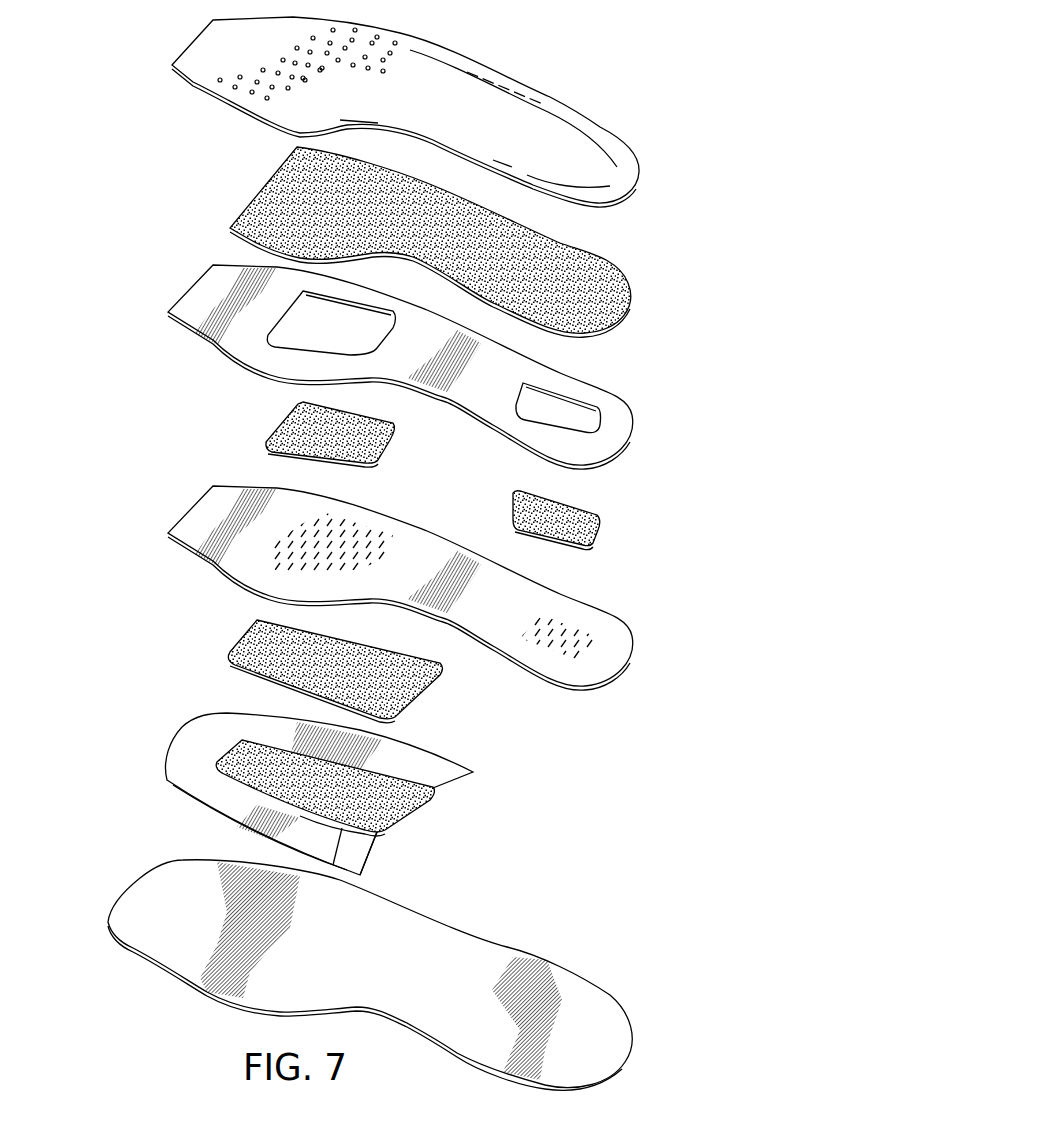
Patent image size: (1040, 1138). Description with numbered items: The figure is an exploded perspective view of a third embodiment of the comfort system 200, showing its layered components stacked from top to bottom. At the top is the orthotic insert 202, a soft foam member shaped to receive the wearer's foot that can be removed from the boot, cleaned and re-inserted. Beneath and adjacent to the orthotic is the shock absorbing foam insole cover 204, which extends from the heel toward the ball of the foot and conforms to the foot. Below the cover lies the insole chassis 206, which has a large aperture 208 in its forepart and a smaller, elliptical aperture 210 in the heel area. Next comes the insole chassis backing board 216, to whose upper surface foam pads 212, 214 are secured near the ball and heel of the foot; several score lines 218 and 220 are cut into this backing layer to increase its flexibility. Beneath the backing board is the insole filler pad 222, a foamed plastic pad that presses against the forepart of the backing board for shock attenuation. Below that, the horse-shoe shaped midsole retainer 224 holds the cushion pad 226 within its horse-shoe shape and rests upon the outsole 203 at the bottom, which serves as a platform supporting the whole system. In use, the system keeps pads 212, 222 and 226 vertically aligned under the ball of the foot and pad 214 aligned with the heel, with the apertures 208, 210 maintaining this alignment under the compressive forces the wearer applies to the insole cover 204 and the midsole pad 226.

The comfort system 200 is at (150, 343).
The orthotic insert 202 is at (618, 167).
The outsole 203 is at (590, 1043).
The shock absorbing foam insole cover 204 is at (620, 306).
The insole chassis 206 is at (421, 367).
The large aperture 208 is at (297, 340).
The elliptical aperture 210 is at (593, 420).
The foam pad 212 is at (361, 445).
The foam pad 214 is at (590, 530).
The insole chassis backing board 216 is at (437, 588).
The score lines 218 is at (275, 560).
The score lines 220 is at (580, 637).
The insole filler pad 222 is at (390, 685).
The midsole retainer 224 is at (207, 745).
The cushion pad 226 is at (398, 795).